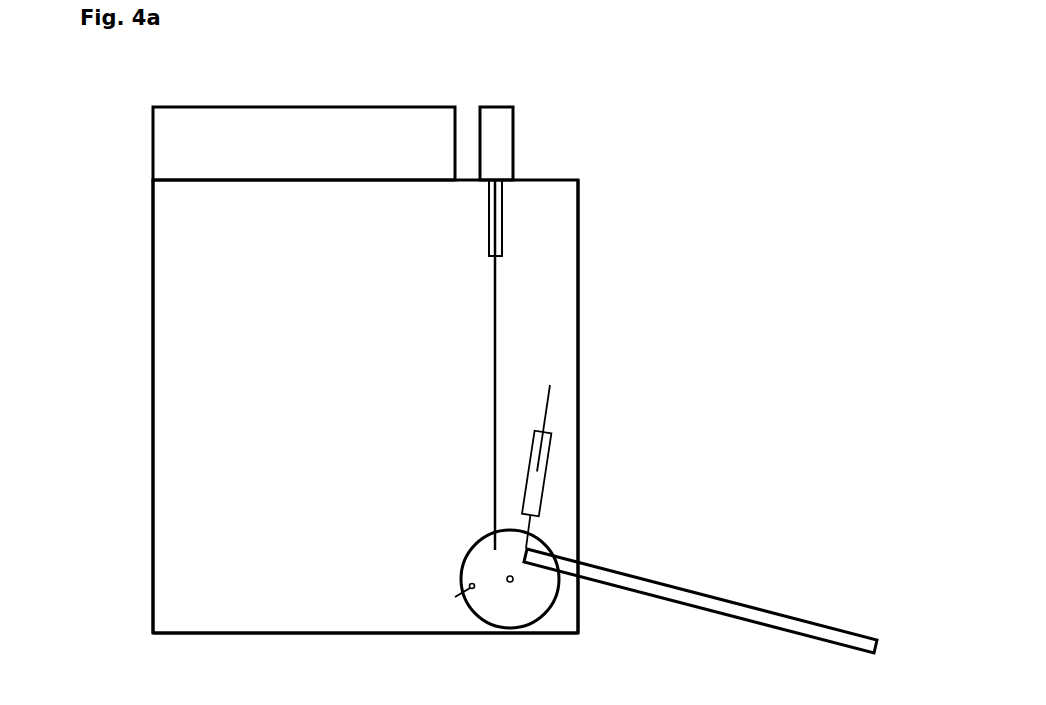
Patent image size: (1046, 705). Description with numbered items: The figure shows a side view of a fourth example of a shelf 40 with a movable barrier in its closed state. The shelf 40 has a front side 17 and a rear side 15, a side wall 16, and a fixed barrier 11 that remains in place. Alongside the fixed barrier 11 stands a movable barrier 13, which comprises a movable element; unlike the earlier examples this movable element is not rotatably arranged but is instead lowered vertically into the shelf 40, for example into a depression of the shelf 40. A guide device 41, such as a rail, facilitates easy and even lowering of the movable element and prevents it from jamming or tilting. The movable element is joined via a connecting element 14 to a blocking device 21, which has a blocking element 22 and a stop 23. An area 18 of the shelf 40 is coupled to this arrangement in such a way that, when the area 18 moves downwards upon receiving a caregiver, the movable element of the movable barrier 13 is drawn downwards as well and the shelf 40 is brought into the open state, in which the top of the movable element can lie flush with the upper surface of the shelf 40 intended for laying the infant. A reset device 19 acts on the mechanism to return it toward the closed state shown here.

The fixed barrier 11 is at (228, 107).
The movable barrier 13 is at (514, 128).
The connecting element 14 is at (497, 275).
The rear side 15 is at (126, 516).
The side wall 16 is at (150, 325).
The front side 17 is at (602, 481).
The area 18 is at (718, 595).
The reset device 19 is at (563, 405).
The blocking device 21 is at (483, 536).
The blocking element 22 is at (456, 574).
The stop 23 is at (442, 596).
The shelf 40 is at (128, 170).
The guide device 41 is at (503, 219).